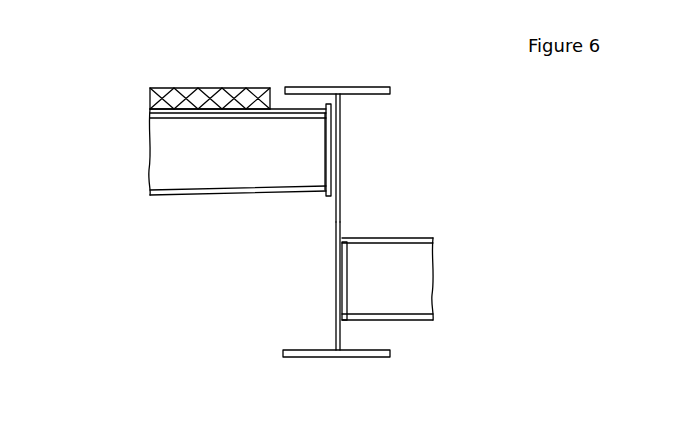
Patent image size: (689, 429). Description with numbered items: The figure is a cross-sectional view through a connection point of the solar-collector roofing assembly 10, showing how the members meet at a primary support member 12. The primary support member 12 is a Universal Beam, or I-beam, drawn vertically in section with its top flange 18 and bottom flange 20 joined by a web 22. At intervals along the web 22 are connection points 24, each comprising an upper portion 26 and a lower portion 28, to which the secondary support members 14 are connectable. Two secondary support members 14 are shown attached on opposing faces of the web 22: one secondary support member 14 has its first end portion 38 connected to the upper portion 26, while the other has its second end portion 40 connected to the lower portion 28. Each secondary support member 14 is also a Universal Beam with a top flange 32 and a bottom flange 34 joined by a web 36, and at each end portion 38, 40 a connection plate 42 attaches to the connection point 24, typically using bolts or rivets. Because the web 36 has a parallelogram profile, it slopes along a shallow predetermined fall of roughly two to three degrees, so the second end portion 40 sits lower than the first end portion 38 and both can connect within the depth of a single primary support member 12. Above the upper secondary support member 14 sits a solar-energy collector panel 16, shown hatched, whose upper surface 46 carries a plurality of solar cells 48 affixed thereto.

The solar-collector roofing assembly 10 is at (68, 91).
The primary support member 12 is at (337, 372).
The secondary support member 14 is at (164, 203).
The solar-energy collector panel 16 is at (231, 94).
The top flange 18 is at (376, 87).
The bottom flange 20 is at (303, 360).
The web 22 is at (339, 222).
The connection point 24 is at (344, 168).
The upper portion 26 is at (338, 158).
The lower portion 28 is at (338, 286).
The top flange 32 is at (166, 120).
The bottom flange 34 is at (150, 190).
The web 36 is at (164, 146).
The first end portion 38 is at (308, 149).
The second end portion 40 is at (373, 301).
The connection plate 42 is at (334, 133).
The upper surface 46 is at (255, 84).
The solar cells 48 is at (210, 98).